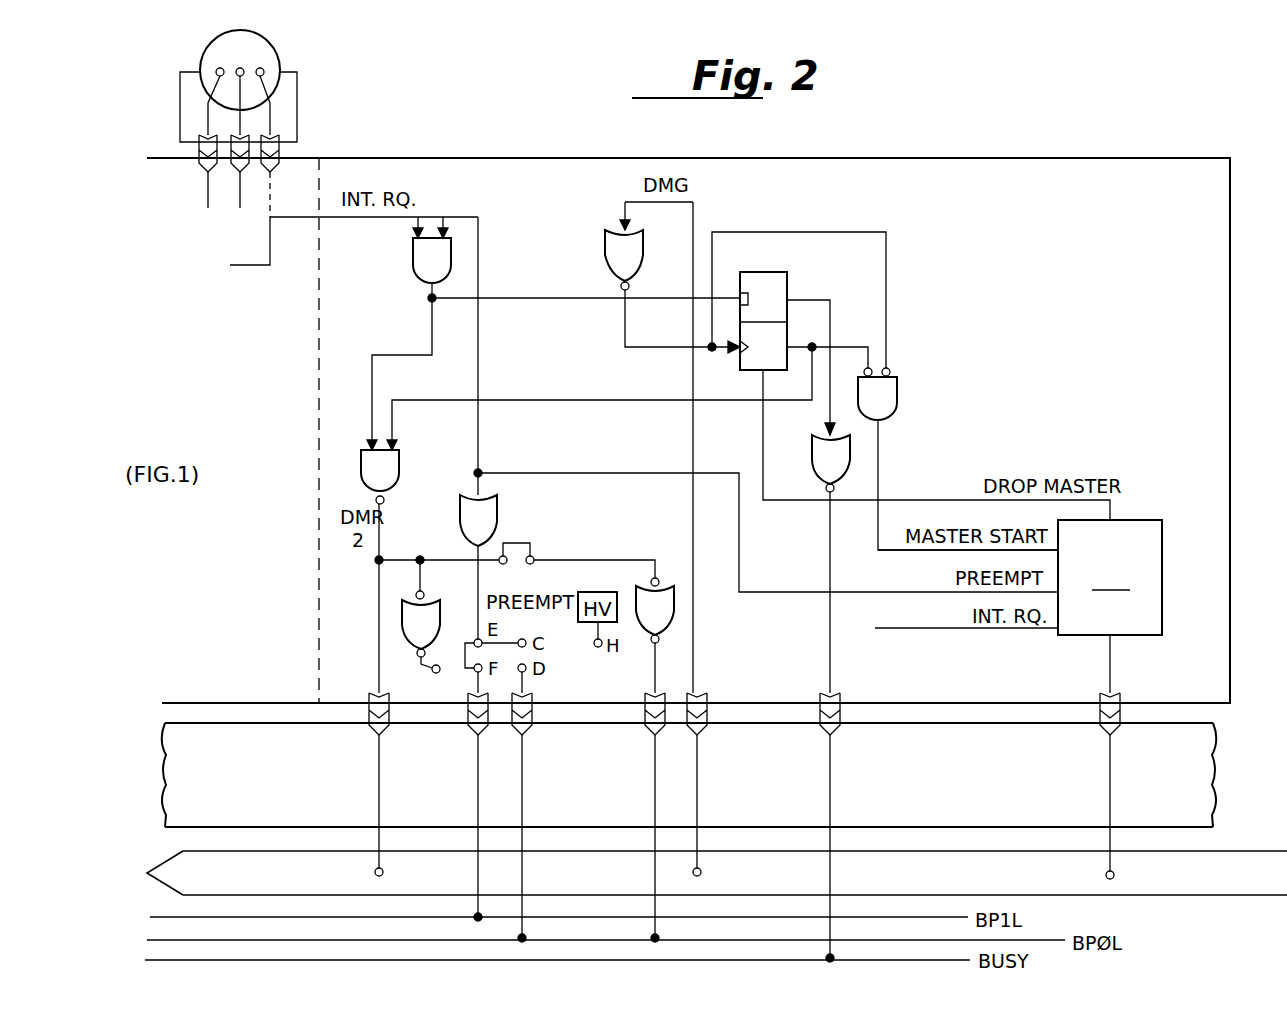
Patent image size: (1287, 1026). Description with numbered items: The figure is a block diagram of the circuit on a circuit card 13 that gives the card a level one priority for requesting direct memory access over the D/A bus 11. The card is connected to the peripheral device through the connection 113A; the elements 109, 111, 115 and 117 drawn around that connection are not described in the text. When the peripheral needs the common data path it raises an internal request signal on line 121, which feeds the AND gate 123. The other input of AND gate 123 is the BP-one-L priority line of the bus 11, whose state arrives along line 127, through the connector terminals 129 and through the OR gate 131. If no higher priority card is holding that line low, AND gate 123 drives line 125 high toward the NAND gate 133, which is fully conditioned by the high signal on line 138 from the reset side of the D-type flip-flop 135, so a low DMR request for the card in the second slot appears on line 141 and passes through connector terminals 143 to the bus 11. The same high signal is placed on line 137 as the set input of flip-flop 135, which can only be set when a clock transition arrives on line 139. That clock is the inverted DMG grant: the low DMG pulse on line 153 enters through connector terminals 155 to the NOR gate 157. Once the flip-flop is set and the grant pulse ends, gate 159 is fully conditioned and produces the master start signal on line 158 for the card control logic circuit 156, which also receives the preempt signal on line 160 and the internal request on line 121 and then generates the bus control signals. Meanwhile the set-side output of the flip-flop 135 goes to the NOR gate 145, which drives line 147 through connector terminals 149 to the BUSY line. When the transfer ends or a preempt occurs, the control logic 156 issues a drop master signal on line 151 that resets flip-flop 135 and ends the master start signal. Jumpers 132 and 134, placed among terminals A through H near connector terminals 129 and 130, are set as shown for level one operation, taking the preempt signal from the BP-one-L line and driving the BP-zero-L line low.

The D/A bus 11 is at (1233, 852).
The circuit card 13 is at (955, 177).
The connector block 109 is at (252, 135).
The connection line 111 is at (198, 148).
The connection 113A is at (263, 56).
The signal line 115 is at (207, 190).
The signal line 117 is at (237, 200).
The internal request line 121 is at (290, 232).
The AND gate 123 is at (418, 262).
The output line 125 is at (400, 357).
The BP1L input line 127 is at (476, 792).
The connector terminals 129 is at (486, 740).
The connector terminals 130 is at (537, 700).
The OR gate 131 is at (483, 515).
The jumper 132 is at (530, 543).
The NAND gate 133 is at (393, 470).
The jumper 134 is at (465, 650).
The flip-flop 135 is at (785, 285).
The set signal line 137 is at (590, 300).
The reset-side output line 138 is at (728, 415).
The clock line 139 is at (718, 353).
The DMR2 line 141 is at (374, 600).
The connector terminals 143 is at (372, 738).
The NOR gate 145 is at (818, 452).
The BUSY output line 147 is at (828, 636).
The connector terminals 149 is at (822, 738).
The reset line 151 is at (797, 505).
The DMG line 153 is at (698, 775).
The connector terminals 155 is at (706, 698).
The card control logic circuit 156 is at (1110, 699).
The NOR gate 157 is at (605, 255).
The master start line 158 is at (905, 552).
The gate 159 is at (893, 392).
The preempt line 160 is at (780, 595).